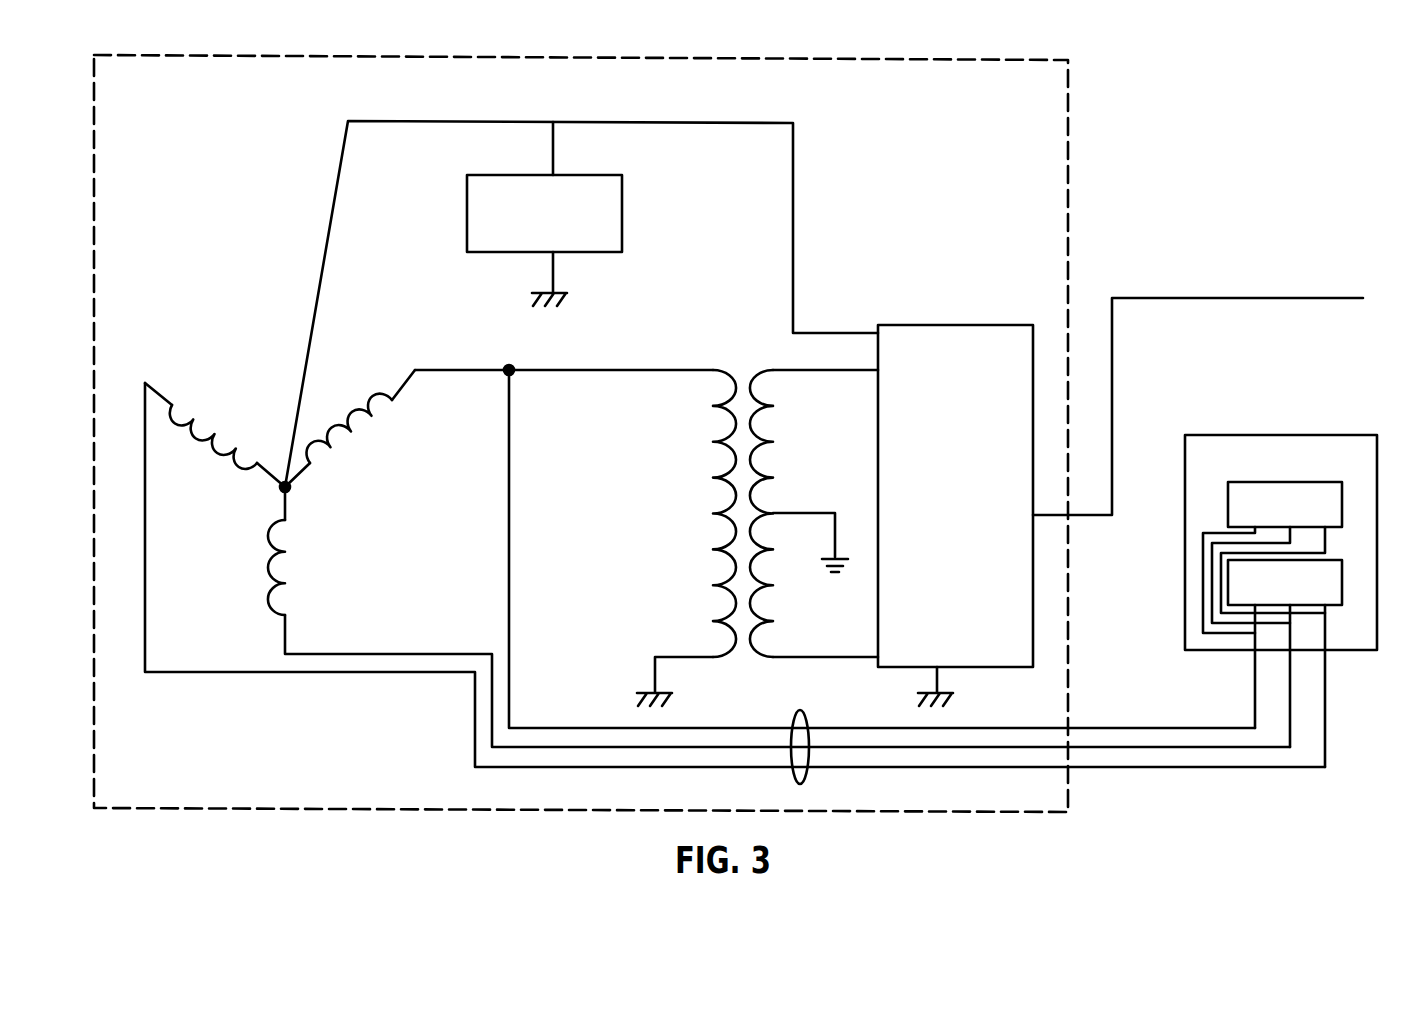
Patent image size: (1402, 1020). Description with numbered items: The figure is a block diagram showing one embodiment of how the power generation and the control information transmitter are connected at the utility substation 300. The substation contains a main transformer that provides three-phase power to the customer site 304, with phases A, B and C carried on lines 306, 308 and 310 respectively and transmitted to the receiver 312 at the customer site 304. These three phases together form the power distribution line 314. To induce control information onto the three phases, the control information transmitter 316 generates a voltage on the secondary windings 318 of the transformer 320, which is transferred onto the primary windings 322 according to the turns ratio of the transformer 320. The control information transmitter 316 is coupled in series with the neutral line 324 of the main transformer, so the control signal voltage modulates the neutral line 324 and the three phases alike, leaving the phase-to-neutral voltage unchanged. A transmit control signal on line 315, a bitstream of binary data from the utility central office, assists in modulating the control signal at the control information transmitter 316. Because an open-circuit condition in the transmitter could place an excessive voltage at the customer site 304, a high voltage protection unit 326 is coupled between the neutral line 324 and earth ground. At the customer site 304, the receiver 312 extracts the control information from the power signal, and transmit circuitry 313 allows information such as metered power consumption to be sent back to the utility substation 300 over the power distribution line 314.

The utility substation 300 is at (1070, 153).
The customer site 304 is at (1265, 435).
The phase A line 306 is at (508, 533).
The phase B line 308 is at (378, 655).
The phase C line 310 is at (381, 673).
The receiver 312 is at (1332, 607).
The transmit circuitry 313 is at (1228, 500).
The power distribution line 314 is at (808, 774).
The transmit control signal line 315 is at (1210, 299).
The control information transmitter 316 is at (940, 325).
The secondary windings 318 is at (773, 548).
The transformer 320 is at (236, 406).
The primary windings 322 is at (712, 495).
The neutral line 324 is at (330, 232).
The high voltage protection unit 326 is at (623, 210).